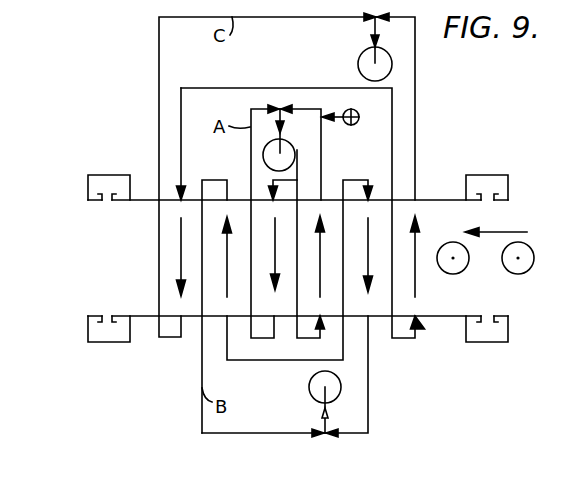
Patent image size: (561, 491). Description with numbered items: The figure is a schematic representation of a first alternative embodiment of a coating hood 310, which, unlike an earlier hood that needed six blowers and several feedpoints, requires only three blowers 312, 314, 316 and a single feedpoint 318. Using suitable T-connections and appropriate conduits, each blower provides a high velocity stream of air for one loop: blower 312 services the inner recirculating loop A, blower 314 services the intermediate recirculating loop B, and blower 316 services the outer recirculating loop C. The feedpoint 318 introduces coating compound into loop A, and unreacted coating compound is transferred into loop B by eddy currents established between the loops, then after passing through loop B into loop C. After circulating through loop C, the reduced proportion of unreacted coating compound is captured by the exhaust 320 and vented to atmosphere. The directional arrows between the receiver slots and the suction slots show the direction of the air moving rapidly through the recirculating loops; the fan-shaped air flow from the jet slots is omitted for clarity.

The coating hood 310 is at (118, 230).
The blower 312 is at (293, 150).
The blower 314 is at (309, 386).
The blower 316 is at (360, 57).
The feedpoint 318 is at (356, 124).
The exhaust 320 is at (103, 343).